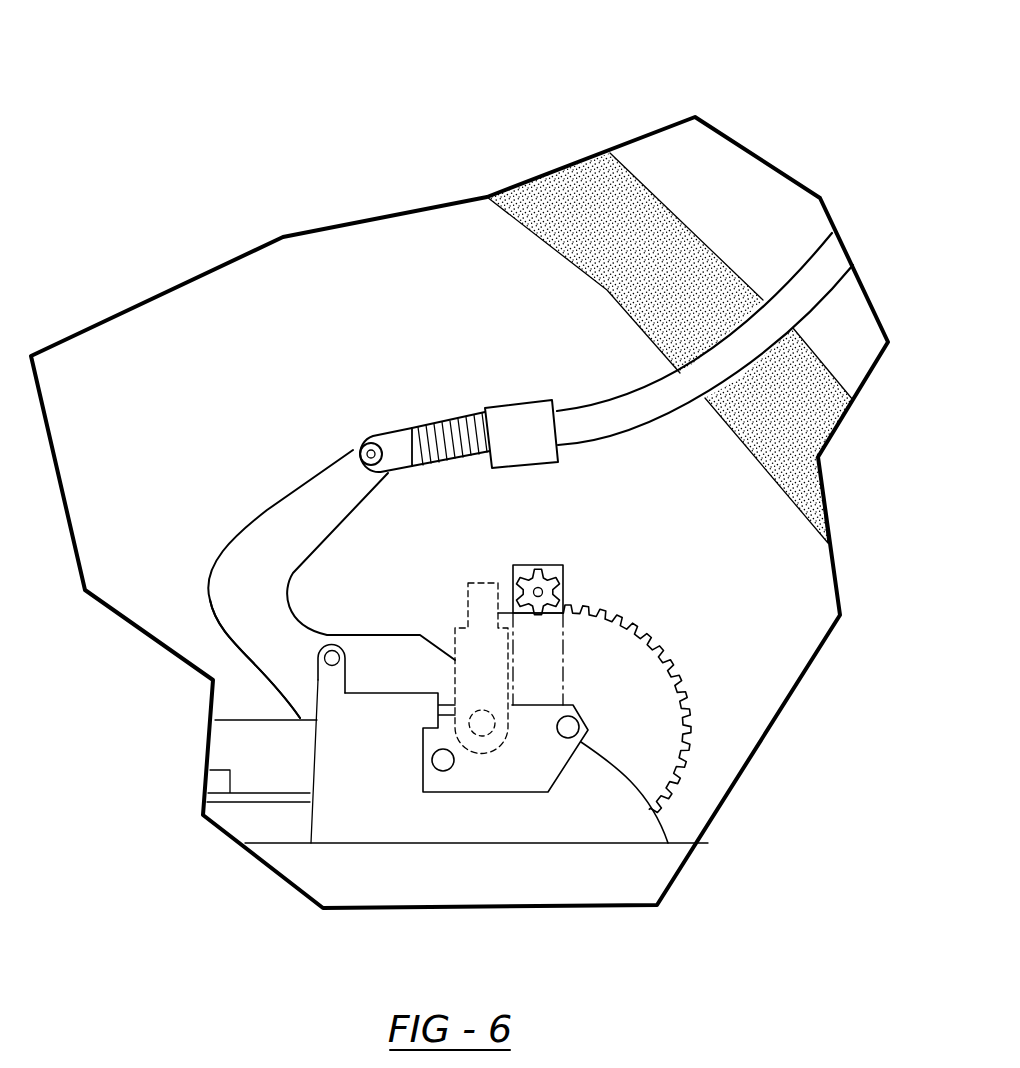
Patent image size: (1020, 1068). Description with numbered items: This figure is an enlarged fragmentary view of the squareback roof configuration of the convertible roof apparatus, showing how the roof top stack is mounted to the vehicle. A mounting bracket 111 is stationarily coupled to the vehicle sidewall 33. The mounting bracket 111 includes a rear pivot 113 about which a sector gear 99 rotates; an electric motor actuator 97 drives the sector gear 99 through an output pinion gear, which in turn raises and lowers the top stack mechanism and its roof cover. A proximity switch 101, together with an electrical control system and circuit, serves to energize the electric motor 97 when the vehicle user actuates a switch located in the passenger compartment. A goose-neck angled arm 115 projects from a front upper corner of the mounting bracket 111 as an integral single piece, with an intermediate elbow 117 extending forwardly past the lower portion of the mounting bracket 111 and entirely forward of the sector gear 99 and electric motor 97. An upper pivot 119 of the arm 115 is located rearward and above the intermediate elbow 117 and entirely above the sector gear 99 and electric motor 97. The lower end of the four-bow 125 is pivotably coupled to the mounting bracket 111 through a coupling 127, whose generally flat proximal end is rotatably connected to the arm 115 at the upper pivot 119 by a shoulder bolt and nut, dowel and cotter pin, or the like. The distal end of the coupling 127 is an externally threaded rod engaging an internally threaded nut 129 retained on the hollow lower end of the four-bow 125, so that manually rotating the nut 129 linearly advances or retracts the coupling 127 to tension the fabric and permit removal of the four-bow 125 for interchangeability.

The sidewall 33 is at (632, 883).
The electric motor actuator 97 is at (563, 578).
The sector gear 99 is at (690, 688).
The proximity switch 101 is at (333, 678).
The mounting bracket 111 is at (420, 773).
The rear pivot 113 is at (568, 727).
The goose-neck angled arm 115 is at (283, 525).
The intermediate elbow 117 is at (207, 593).
The upper pivot 119 is at (365, 455).
The four-bow 125 is at (812, 282).
The coupling 127 is at (425, 432).
The nut 129 is at (515, 425).